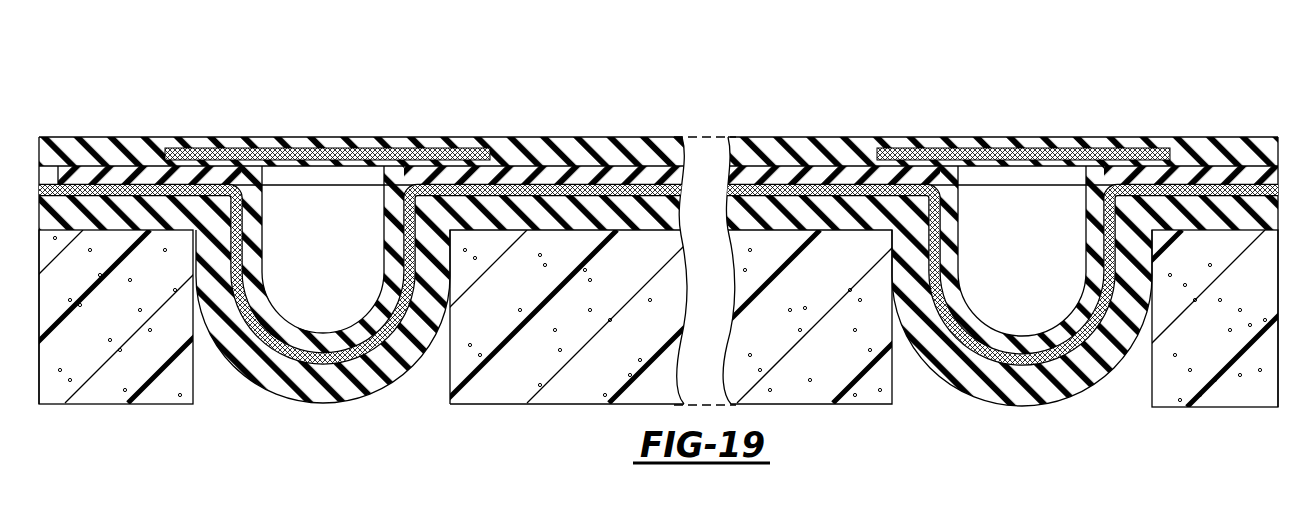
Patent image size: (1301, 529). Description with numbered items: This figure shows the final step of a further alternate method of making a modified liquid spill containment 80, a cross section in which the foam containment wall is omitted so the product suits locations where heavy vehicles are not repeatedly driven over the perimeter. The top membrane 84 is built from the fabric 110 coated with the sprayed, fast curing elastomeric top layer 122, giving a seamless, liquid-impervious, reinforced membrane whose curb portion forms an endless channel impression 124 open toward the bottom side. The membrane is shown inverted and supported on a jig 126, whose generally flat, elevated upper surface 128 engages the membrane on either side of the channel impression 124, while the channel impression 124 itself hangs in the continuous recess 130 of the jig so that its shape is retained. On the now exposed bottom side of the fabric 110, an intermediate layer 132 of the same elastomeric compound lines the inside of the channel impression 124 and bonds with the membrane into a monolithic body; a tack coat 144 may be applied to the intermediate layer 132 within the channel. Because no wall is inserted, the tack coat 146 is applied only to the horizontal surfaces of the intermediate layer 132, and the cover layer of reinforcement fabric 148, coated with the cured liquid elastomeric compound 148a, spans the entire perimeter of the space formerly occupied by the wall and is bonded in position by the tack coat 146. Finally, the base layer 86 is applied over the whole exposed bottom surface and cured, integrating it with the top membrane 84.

The liquid spill containment 80 is at (212, 86).
The top membrane 84 is at (610, 145).
The base layer 86 is at (792, 145).
The fabric 110 is at (547, 145).
The top layer 122 is at (715, 205).
The channel impression 124 is at (320, 355).
The jig 126 is at (145, 410).
The upper surface 128 is at (66, 183).
The recess 130 is at (445, 402).
The intermediate layer 132 is at (95, 170).
The tack coat 144 is at (423, 147).
The tack coat 146 is at (242, 147).
The reinforcement fabric 148 is at (182, 147).
The liquid elastomeric compound coating 148a is at (350, 140).